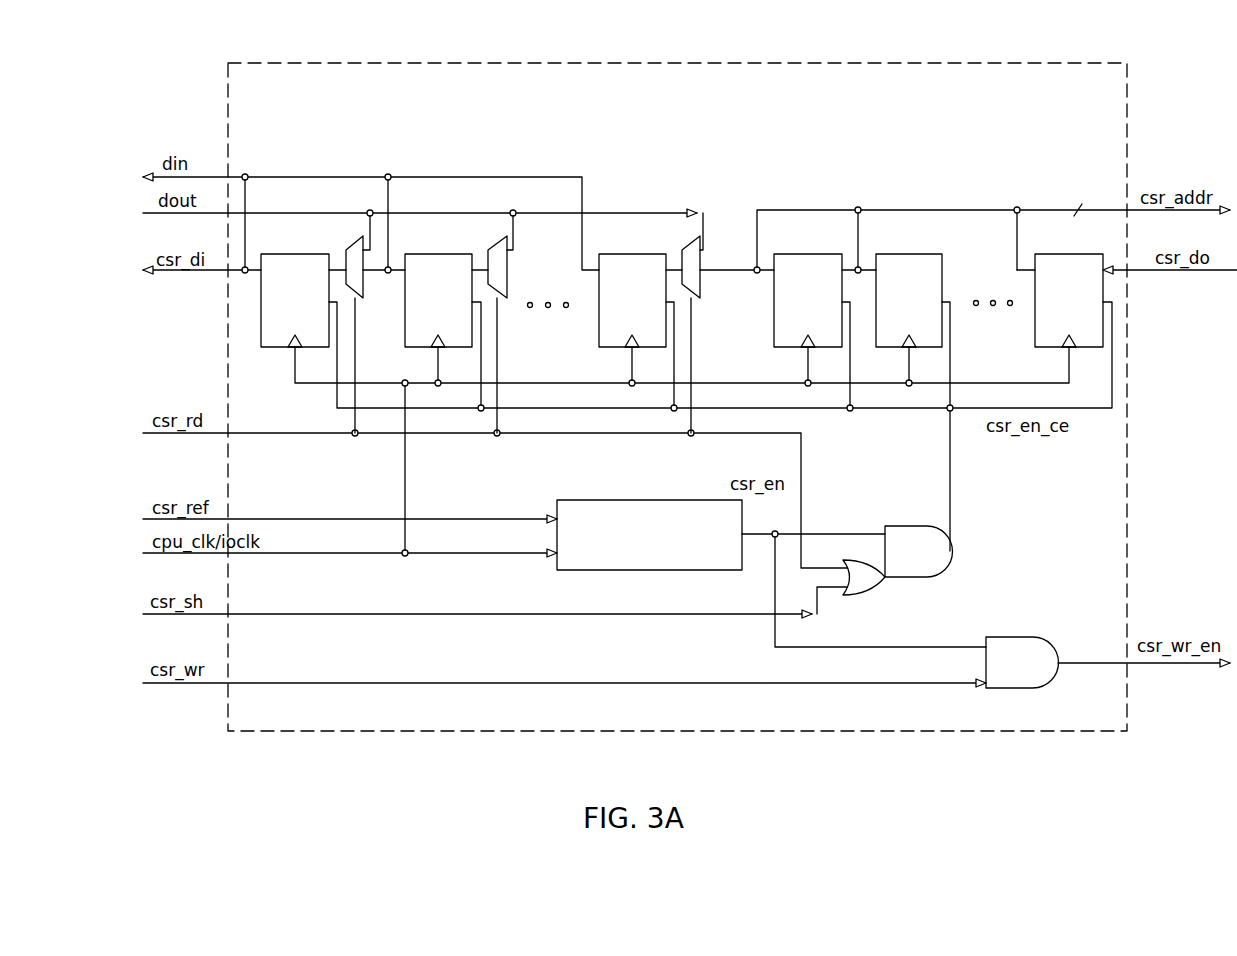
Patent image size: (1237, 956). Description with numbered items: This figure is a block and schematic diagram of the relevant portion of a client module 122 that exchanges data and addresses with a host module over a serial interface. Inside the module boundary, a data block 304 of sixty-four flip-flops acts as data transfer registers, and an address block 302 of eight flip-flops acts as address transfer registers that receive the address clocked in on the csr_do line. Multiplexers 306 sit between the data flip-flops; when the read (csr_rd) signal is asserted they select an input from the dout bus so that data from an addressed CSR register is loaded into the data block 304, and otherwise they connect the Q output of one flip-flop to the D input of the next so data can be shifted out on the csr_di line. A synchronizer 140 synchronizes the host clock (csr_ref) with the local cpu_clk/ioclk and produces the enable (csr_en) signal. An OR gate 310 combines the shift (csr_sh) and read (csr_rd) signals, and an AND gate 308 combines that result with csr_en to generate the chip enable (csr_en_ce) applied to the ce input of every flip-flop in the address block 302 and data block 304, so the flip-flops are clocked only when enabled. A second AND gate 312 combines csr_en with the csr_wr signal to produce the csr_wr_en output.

The client module 122 is at (940, 63).
The data block 304 is at (665, 160).
The address block 302 is at (1110, 175).
The multiplexers 306 is at (366, 290).
The synchronizer 140 is at (598, 500).
The AND gate 308 is at (907, 526).
The OR gate 310 is at (868, 596).
The AND gate 312 is at (1017, 637).